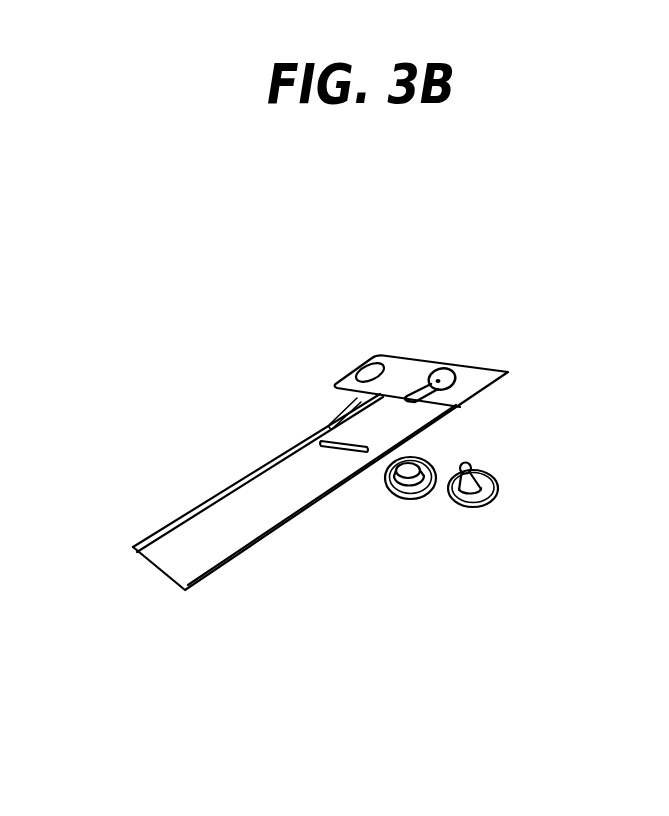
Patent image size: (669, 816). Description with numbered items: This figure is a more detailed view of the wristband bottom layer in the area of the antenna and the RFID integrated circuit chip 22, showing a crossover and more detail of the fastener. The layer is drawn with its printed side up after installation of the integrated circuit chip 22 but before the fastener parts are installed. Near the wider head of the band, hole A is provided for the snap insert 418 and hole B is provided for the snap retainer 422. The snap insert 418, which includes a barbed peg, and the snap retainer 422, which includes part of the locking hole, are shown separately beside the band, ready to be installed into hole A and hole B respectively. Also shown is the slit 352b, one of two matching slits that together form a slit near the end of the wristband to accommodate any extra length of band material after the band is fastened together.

The RFID integrated circuit chip 22 is at (358, 421).
The slit 352b is at (322, 447).
The snap insert 418 is at (498, 490).
The snap retainer 422 is at (394, 502).
The hole A is at (447, 367).
The hole B is at (342, 378).